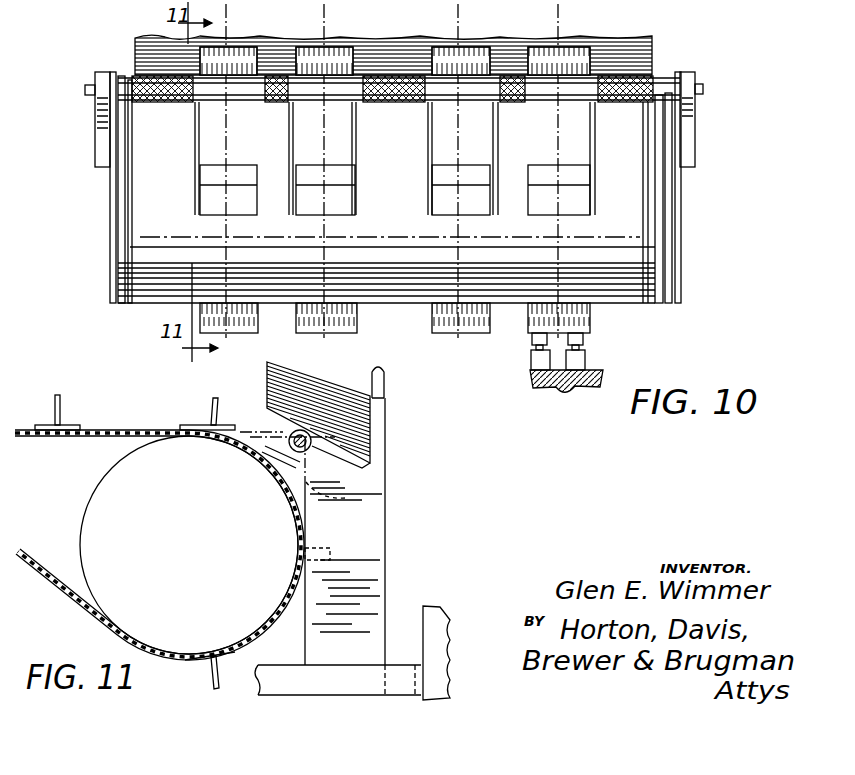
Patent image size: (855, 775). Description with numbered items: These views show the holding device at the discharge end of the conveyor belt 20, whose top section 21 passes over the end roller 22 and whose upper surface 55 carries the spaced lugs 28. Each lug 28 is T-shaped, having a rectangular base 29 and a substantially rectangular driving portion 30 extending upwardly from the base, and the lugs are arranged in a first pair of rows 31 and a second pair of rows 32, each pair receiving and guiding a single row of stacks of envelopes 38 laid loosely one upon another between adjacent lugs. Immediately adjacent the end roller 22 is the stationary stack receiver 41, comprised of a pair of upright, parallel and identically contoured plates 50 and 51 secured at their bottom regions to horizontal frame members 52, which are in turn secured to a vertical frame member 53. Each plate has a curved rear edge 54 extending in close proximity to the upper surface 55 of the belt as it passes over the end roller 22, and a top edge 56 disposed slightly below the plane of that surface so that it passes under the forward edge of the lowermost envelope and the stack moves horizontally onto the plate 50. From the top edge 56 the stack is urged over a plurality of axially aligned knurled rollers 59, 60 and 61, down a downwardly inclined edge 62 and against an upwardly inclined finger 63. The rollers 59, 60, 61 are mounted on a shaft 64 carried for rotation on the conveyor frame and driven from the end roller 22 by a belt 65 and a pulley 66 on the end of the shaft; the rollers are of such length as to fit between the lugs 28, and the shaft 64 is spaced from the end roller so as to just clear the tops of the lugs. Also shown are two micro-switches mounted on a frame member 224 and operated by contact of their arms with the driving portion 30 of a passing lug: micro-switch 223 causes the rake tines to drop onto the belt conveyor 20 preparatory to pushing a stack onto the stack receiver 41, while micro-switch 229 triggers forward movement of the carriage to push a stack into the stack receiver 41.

In FIG. 11, the conveyor belt 20 is at (66, 436).
In FIG. 11, the top section 21 is at (117, 428).
In FIG. 11, the end roller 22 is at (143, 513).
In FIG. 10, the lug 28 is at (428, 176).
In FIG. 11, the lug 28 is at (54, 400).
In FIG. 10, the base 29 is at (240, 167).
In FIG. 10, the driving portion 30 is at (243, 48).
In FIG. 11, the driving portion 30 is at (61, 398).
In FIG. 10, the first pair of rows 31 is at (324, 228).
In FIG. 10, the second pair of rows 32 is at (558, 225).
In FIG. 10, the envelope 38 is at (650, 40).
In FIG. 11, the stack receiver 41 is at (390, 548).
In FIG. 10, the plate 50 is at (196, 153).
In FIG. 11, the plate 50 is at (380, 492).
In FIG. 10, the plate 51 is at (294, 152).
In FIG. 11, the horizontal frame member 52 is at (337, 678).
In FIG. 11, the vertical frame member 53 is at (442, 626).
In FIG. 11, the rear edge 54 is at (270, 474).
In FIG. 11, the upper surface 55 is at (262, 447).
In FIG. 11, the top edge 56 is at (242, 428).
In FIG. 10, the roller 59 is at (404, 102).
In FIG. 10, the roller 60 is at (276, 102).
In FIG. 10, the roller 61 is at (174, 102).
In FIG. 11, the downwardly inclined edge 62 is at (360, 441).
In FIG. 11, the upwardly inclined finger 63 is at (386, 402).
In FIG. 10, the shaft 64 is at (346, 98).
In FIG. 11, the shaft 64 is at (314, 448).
In FIG. 10, the belt 65 is at (127, 183).
In FIG. 11, the belt 65 is at (368, 504).
In FIG. 10, the pulley 66 is at (122, 78).
In FIG. 11, the pulley 66 is at (288, 452).
In FIG. 10, the micro-switch 223 is at (577, 356).
In FIG. 10, the frame member 224 is at (563, 388).
In FIG. 10, the micro-switch 229 is at (535, 360).